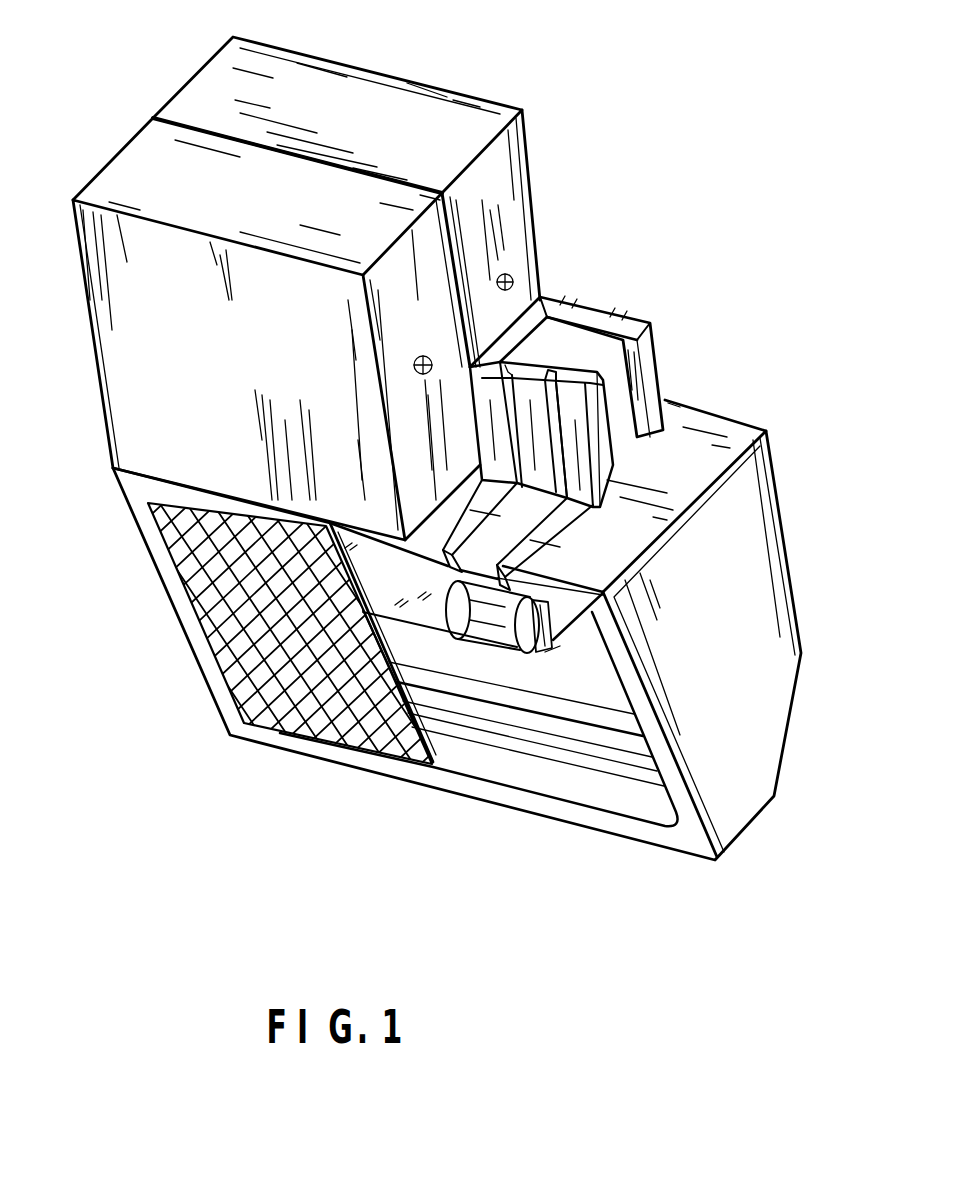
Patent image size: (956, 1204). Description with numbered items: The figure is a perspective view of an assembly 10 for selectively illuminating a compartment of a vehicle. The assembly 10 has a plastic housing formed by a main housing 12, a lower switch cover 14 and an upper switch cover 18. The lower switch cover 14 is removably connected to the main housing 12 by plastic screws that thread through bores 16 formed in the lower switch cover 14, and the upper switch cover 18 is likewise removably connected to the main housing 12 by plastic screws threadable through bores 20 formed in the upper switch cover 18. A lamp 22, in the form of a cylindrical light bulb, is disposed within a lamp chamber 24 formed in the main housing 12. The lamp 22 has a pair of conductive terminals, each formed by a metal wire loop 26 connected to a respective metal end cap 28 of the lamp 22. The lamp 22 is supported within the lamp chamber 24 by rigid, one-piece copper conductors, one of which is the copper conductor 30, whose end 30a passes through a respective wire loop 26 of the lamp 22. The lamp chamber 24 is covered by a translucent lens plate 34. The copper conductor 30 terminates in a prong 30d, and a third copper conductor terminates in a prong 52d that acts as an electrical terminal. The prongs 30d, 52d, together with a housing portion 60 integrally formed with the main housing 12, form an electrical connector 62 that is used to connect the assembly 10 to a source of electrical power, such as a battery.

The assembly 10 is at (580, 78).
The main housing 12 is at (740, 518).
The lower switch cover 14 is at (150, 150).
The bores 16 is at (426, 354).
The upper switch cover 18 is at (313, 85).
The bores 20 is at (512, 274).
The lamp 22 is at (396, 627).
The lamp chamber 24 is at (536, 768).
The metal wire loop 26 is at (560, 645).
The metal end cap 28 is at (477, 613).
The copper conductor 30 is at (582, 644).
The end of copper conductor 30a is at (536, 603).
The prong 30d is at (605, 432).
The translucent lens plate 34 is at (300, 712).
The prong 52d is at (540, 368).
The housing portion 60 is at (650, 360).
The electrical connector 62 is at (632, 304).